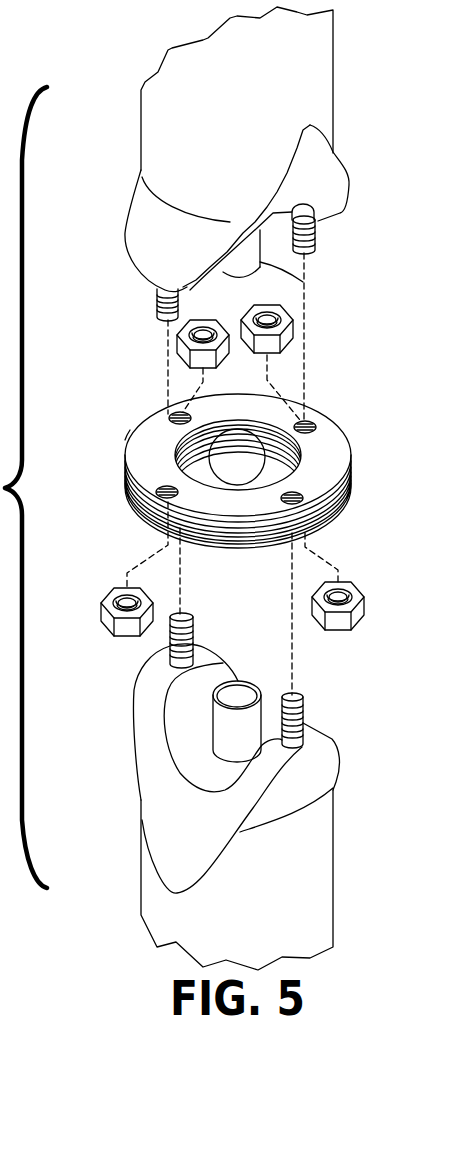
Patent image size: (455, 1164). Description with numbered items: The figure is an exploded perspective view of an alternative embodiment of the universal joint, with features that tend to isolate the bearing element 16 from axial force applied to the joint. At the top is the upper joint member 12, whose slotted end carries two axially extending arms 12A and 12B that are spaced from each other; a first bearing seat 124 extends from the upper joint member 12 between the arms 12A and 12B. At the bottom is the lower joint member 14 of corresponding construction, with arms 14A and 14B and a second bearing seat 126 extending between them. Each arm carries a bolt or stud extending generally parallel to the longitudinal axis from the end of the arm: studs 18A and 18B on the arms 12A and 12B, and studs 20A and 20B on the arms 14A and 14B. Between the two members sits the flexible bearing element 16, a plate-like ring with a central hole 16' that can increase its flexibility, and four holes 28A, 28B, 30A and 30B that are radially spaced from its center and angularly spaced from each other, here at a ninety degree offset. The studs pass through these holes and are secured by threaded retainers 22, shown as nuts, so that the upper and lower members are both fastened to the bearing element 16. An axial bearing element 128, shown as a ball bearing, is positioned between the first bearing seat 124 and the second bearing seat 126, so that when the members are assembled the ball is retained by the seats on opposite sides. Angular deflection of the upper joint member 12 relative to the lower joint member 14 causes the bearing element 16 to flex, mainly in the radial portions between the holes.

The upper joint member 12 is at (141, 128).
The arm of upper joint member 12A is at (340, 178).
The arm of upper joint member 12B is at (143, 251).
The first bearing seat 124 is at (303, 282).
The stud 18A is at (316, 240).
The stud 18B is at (157, 305).
The retainer 22 is at (177, 348).
The bearing element 16 is at (272, 471).
The hole in bearing element 16' is at (105, 438).
The hole of bearing element 30A is at (171, 416).
The hole of bearing element 30B is at (303, 500).
The hole of bearing element 28A is at (156, 494).
The hole of bearing element 28B is at (316, 423).
The axial bearing element 128 is at (238, 483).
The lower joint member 14 is at (333, 893).
The arm of lower joint member 14A is at (320, 780).
The arm of lower joint member 14B is at (134, 712).
The second bearing seat 126 is at (255, 683).
The stud 20A is at (305, 712).
The stud 20B is at (195, 633).